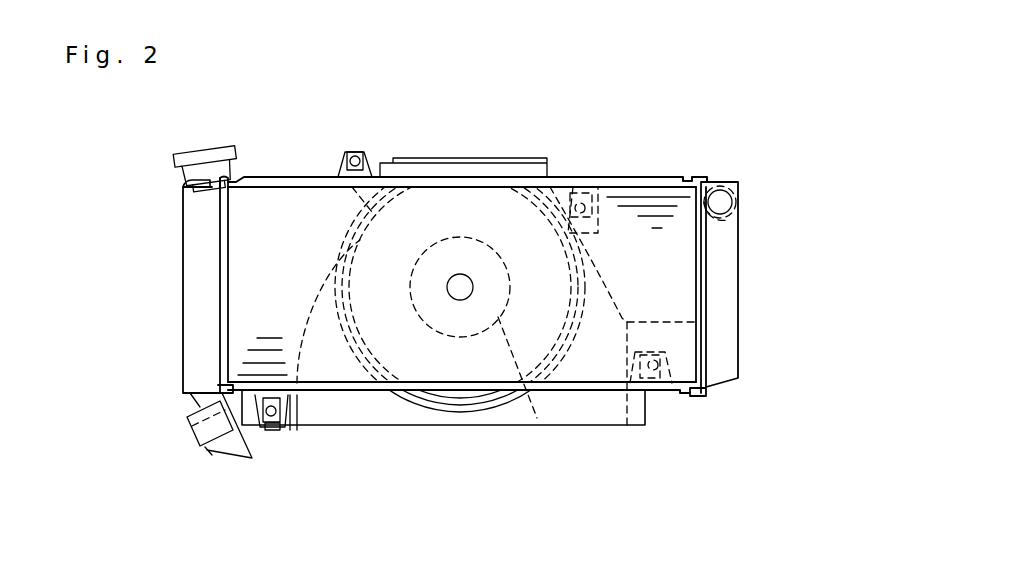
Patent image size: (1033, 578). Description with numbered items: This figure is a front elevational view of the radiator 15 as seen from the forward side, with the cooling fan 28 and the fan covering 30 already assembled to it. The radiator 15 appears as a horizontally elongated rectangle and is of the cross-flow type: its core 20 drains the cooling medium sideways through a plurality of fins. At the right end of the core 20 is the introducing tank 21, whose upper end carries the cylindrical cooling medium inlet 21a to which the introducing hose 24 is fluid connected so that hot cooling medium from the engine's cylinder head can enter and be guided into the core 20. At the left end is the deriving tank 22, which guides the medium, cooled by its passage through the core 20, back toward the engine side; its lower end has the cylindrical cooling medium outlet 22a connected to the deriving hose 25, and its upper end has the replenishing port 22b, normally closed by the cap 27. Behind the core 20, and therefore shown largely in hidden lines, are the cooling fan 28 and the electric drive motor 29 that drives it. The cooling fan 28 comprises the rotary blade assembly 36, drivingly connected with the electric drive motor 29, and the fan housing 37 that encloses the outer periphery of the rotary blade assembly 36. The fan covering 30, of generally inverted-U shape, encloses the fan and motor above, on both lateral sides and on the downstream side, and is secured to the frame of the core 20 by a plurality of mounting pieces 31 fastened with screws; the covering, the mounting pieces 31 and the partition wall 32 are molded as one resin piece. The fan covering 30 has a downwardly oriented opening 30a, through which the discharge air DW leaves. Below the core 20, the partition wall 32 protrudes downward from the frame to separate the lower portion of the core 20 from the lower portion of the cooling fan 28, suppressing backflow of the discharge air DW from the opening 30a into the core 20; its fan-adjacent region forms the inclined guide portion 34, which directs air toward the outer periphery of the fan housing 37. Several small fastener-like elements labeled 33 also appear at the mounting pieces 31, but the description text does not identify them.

The radiator 15 is at (720, 166).
The core 20 is at (653, 204).
The introducing tank 21 is at (724, 290).
The cooling medium inlet 21a is at (740, 202).
The deriving tank 22 is at (200, 287).
The cooling medium outlet 22a is at (205, 457).
The replenishing port 22b is at (183, 205).
The introducing hose 24 is at (728, 222).
The deriving hose 25 is at (213, 470).
The cap 27 is at (206, 147).
The cooling fan 28 is at (345, 503).
The electric drive motor 29 is at (537, 418).
The fan covering 30 is at (697, 324).
The opening 30a is at (613, 426).
The mounting pieces 31 is at (340, 178).
The partition wall 32 is at (560, 418).
The bolt 33 is at (356, 160).
The guide portion 34 is at (450, 402).
The rotary blade assembly 36 is at (463, 210).
The fan housing 37 is at (437, 400).
The discharge air DW is at (465, 415).